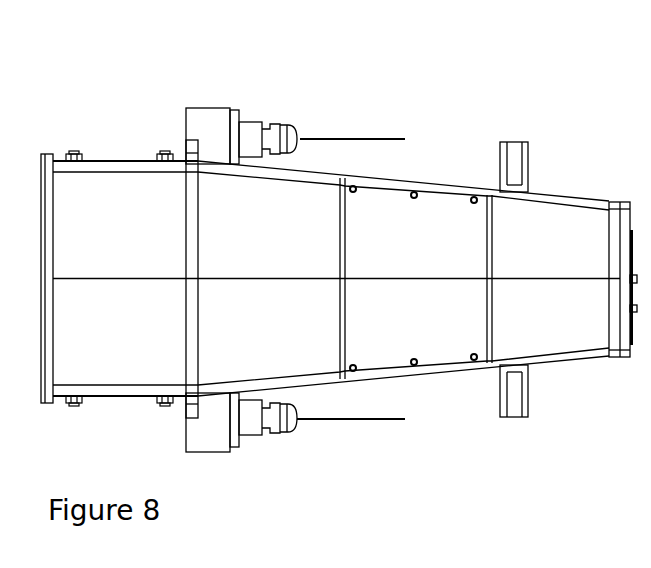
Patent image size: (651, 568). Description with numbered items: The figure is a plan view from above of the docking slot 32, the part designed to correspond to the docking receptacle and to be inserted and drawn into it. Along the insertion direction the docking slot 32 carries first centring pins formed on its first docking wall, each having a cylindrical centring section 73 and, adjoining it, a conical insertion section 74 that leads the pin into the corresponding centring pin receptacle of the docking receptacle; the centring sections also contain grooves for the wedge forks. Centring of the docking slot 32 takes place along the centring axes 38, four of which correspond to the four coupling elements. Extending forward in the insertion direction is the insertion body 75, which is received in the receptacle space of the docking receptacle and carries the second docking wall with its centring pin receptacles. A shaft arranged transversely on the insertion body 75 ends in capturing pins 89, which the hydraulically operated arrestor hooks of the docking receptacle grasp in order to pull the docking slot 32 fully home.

The docking slot 32 is at (122, 80).
The centring axes 38 is at (384, 139).
The cylindrical centring section 73 is at (275, 124).
The conical insertion section 74 is at (252, 281).
The insertion body 75 is at (287, 124).
The capturing pins 89 is at (515, 162).